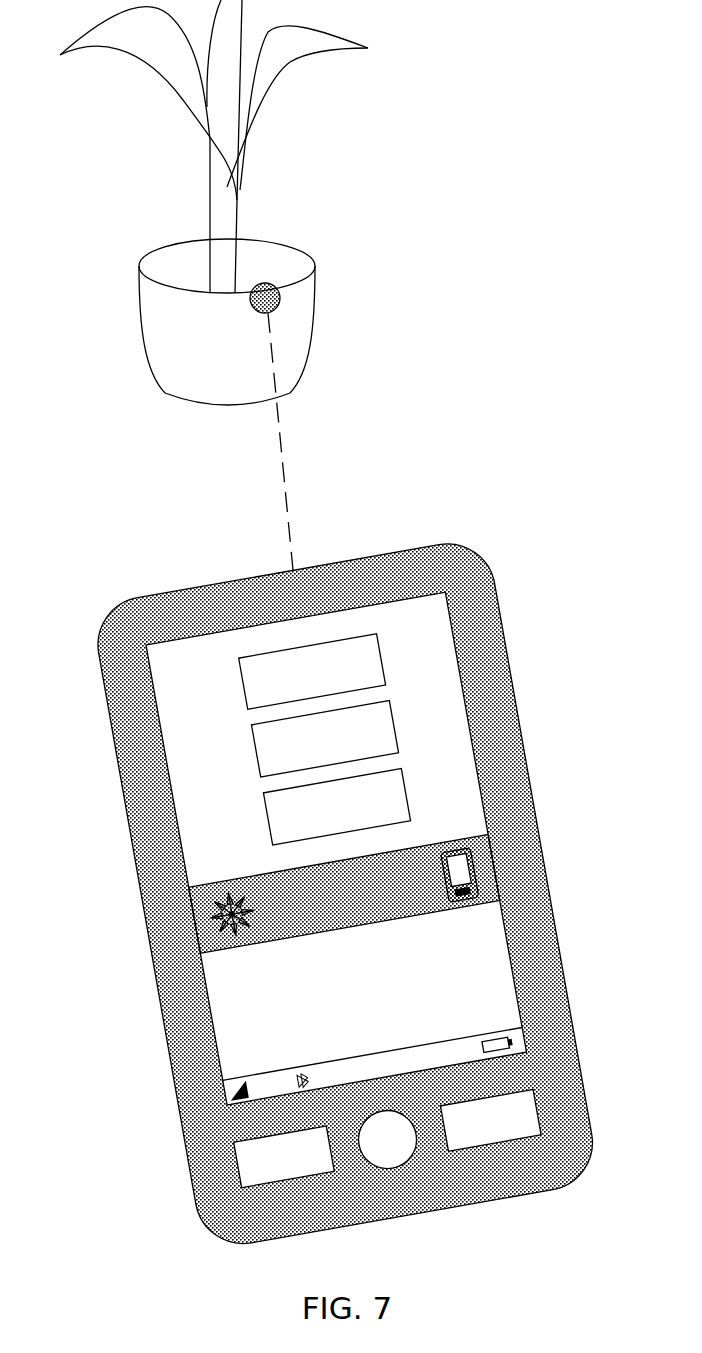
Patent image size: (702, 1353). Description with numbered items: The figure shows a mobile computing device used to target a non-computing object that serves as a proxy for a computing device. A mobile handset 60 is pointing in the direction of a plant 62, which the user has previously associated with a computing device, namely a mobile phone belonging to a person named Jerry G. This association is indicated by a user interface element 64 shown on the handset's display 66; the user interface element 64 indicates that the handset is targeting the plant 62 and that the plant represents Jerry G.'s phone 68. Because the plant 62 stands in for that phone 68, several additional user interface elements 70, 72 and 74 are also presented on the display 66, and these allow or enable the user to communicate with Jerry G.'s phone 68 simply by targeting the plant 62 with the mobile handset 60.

The mobile handset 60 is at (331, 867).
The plant 62 is at (138, 193).
The user interface element 64 is at (198, 921).
The display 66 is at (319, 799).
The phone 68 is at (475, 866).
The user interface element 70 is at (383, 686).
The user interface element 72 is at (400, 755).
The user interface element 74 is at (410, 814).